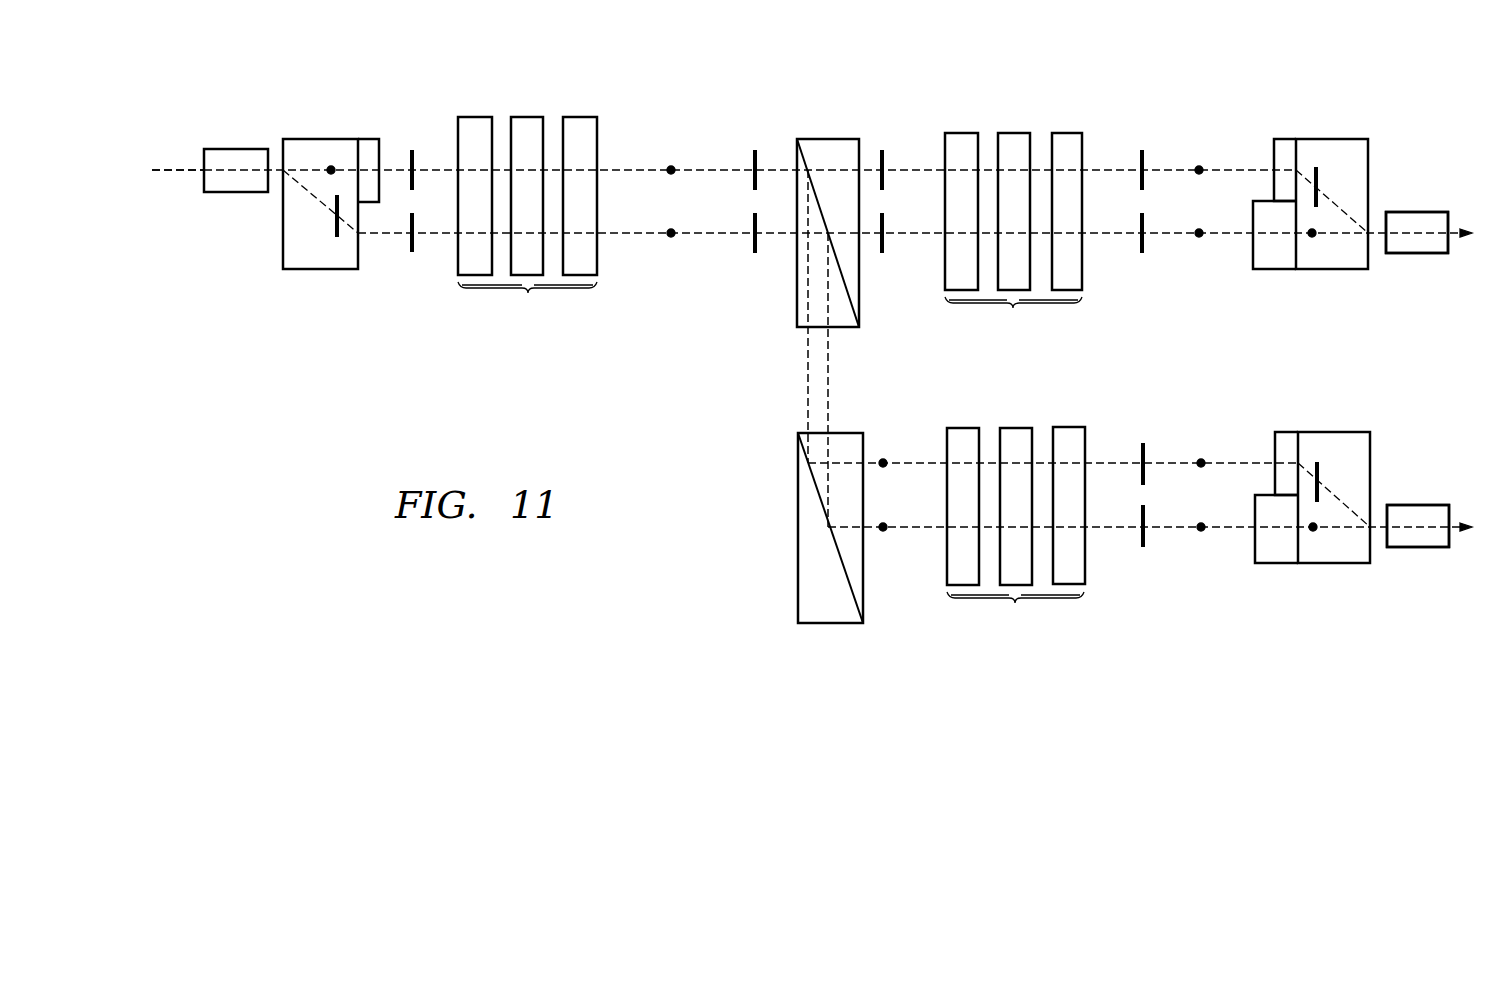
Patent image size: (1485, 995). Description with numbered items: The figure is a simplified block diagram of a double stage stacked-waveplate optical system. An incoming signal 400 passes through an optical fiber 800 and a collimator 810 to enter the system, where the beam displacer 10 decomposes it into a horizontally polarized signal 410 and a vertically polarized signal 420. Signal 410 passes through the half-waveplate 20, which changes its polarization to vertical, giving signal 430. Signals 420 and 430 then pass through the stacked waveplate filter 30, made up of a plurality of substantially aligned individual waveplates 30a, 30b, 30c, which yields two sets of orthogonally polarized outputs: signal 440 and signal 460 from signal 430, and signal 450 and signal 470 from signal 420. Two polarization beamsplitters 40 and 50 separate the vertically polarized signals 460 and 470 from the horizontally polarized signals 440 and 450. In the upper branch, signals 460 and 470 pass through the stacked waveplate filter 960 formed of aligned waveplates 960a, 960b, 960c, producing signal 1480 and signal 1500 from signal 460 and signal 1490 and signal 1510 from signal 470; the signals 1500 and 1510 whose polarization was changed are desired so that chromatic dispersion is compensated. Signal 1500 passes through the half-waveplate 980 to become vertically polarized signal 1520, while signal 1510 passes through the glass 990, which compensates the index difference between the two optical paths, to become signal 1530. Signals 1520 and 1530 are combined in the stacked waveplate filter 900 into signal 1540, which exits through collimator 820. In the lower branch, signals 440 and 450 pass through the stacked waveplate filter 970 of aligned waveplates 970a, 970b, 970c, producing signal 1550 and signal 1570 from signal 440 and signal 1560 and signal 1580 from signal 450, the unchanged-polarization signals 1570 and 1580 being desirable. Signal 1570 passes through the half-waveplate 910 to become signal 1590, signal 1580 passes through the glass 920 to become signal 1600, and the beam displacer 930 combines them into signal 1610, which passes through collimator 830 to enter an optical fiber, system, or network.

The incoming signal 400 is at (168, 168).
The optical fiber 800 is at (180, 173).
The collimator 810 is at (238, 149).
The beam displacer 10 is at (320, 270).
The half-waveplate 20 is at (369, 139).
The signal 410 is at (331, 165).
The signal 420 is at (413, 253).
The signal 430 is at (412, 150).
The waveplate 30a is at (472, 117).
The waveplate 30b is at (525, 117).
The waveplate 30c is at (578, 117).
The stacked waveplate filter 30 is at (527, 303).
The signal 440 is at (883, 459).
The signal 450 is at (883, 531).
The signal 460 is at (882, 150).
The signal 470 is at (882, 254).
The polarization beamsplitter 40 is at (827, 139).
The polarization beamsplitter 50 is at (831, 624).
The waveplate 960a is at (957, 133).
The waveplate 960b is at (1013, 133).
The waveplate 960c is at (1072, 133).
The stacked waveplate filter 960 is at (1013, 318).
The waveplate 970a is at (957, 428).
The waveplate 970b is at (1013, 428).
The waveplate 970c is at (1073, 427).
The stacked waveplate filter 970 is at (1015, 613).
The signal 1480 is at (1142, 150).
The signal 1490 is at (1142, 254).
The signal 1500 is at (1199, 166).
The signal 1510 is at (1199, 237).
The stacked waveplate filter 900 is at (1361, 152).
The half-waveplate 980 is at (1287, 145).
The glass 990 is at (1270, 270).
The signal 1520 is at (1318, 175).
The signal 1530 is at (1312, 238).
The signal 1540 is at (1418, 212).
The collimator 820 is at (1418, 254).
The signal 1550 is at (1143, 443).
The signal 1560 is at (1143, 548).
The signal 1570 is at (1201, 459).
The signal 1580 is at (1201, 531).
The beam displacer 930 is at (1362, 447).
The half-waveplate 910 is at (1288, 440).
The glass 920 is at (1272, 563).
The signal 1590 is at (1320, 470).
The signal 1600 is at (1313, 531).
The signal 1610 is at (1420, 505).
The collimator 830 is at (1420, 548).